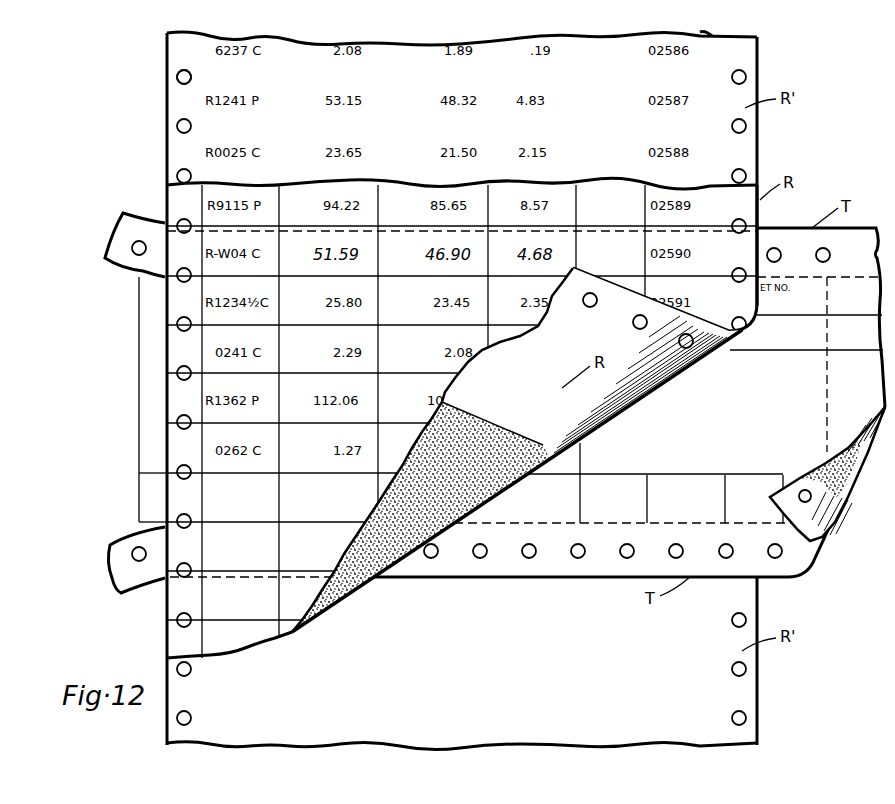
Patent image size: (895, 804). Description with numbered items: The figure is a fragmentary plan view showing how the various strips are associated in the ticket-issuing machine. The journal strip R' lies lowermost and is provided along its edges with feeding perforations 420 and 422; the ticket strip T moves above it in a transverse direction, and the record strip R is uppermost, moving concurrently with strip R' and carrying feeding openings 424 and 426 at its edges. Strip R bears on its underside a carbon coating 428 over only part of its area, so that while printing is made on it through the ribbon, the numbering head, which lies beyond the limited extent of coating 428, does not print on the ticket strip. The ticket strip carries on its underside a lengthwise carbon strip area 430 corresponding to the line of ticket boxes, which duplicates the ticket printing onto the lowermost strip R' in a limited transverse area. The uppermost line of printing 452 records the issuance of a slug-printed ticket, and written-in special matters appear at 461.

The feeding perforations 420 is at (748, 73).
The feeding perforations 422 is at (176, 78).
The feeding openings 424 is at (586, 308).
The feeding openings 426 is at (177, 618).
The carbon coating 428 is at (482, 418).
The carbon strip area 430 is at (793, 470).
The uppermost line of printing 452 is at (703, 48).
The special written-in matters 461 is at (173, 201).